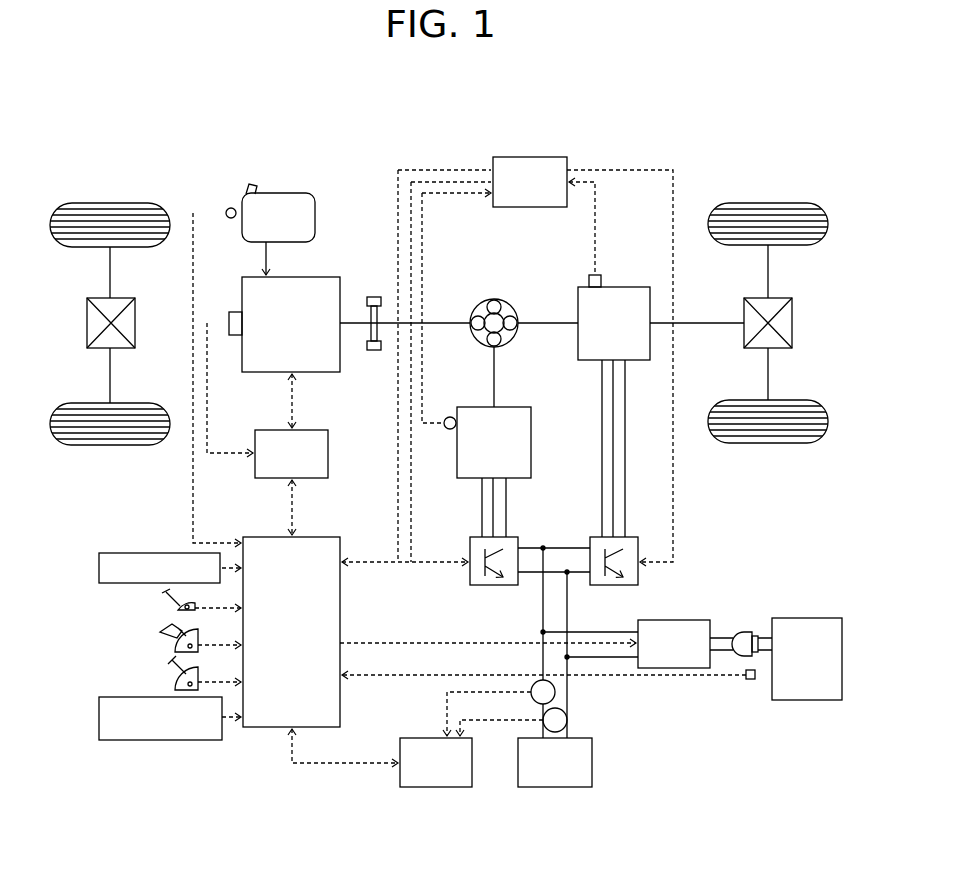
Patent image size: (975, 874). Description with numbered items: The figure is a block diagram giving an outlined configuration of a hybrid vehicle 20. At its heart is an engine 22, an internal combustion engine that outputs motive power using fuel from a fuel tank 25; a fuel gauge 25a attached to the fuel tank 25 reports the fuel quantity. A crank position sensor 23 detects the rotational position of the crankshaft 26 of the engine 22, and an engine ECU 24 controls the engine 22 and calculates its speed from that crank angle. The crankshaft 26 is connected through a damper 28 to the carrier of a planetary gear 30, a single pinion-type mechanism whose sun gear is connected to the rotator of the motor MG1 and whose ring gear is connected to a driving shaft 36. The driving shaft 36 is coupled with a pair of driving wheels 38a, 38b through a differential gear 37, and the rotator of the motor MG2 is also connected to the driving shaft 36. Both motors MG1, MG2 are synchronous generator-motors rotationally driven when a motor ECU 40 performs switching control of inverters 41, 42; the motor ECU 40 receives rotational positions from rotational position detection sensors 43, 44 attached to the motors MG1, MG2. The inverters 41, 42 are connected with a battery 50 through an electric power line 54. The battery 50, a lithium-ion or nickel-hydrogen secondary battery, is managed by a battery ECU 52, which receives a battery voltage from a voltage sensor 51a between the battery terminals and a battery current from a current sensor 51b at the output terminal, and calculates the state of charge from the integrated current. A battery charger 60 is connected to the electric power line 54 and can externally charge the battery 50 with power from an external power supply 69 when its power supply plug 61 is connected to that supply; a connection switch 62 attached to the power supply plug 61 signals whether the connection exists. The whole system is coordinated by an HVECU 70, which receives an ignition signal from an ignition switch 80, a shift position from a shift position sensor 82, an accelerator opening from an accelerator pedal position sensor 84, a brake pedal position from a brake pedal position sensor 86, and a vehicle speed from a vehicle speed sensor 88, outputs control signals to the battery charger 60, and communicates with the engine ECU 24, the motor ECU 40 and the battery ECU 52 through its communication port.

The hybrid vehicle 20 is at (649, 131).
The engine 22 is at (318, 277).
The crank position sensor 23 is at (238, 312).
The engine ECU 24 is at (313, 430).
The fuel tank 25 is at (290, 193).
The fuel gauge 25a is at (229, 208).
The crankshaft 26 is at (349, 320).
The damper 28 is at (374, 352).
The planetary gear 30 is at (489, 300).
The driving shaft 36 is at (713, 320).
The differential gear 37 is at (778, 298).
The driving wheel 38a is at (768, 203).
The driving wheel 38b is at (768, 444).
The motor ECU 40 is at (543, 157).
The inverter 41 is at (512, 537).
The inverter 42 is at (638, 537).
The rotational position detection sensor 43 is at (452, 417).
The rotational position detection sensor 44 is at (589, 275).
The battery 50 is at (592, 762).
The voltage sensor 51a is at (568, 720).
The current sensor 51b is at (556, 692).
The battery ECU 52 is at (426, 738).
The electric power line 54 is at (564, 571).
The battery charger 60 is at (672, 620).
The power supply plug 61 is at (752, 632).
The connection switch 62 is at (751, 680).
The external power supply 69 is at (803, 618).
The HVECU 70 is at (313, 537).
The ignition switch 80 is at (99, 568).
The shift position sensor 82 is at (165, 610).
The accelerator pedal position sensor 84 is at (175, 645).
The brake pedal position sensor 86 is at (175, 682).
The vehicle speed sensor 88 is at (99, 717).
The motor MG1 is at (515, 407).
The motor MG2 is at (624, 287).